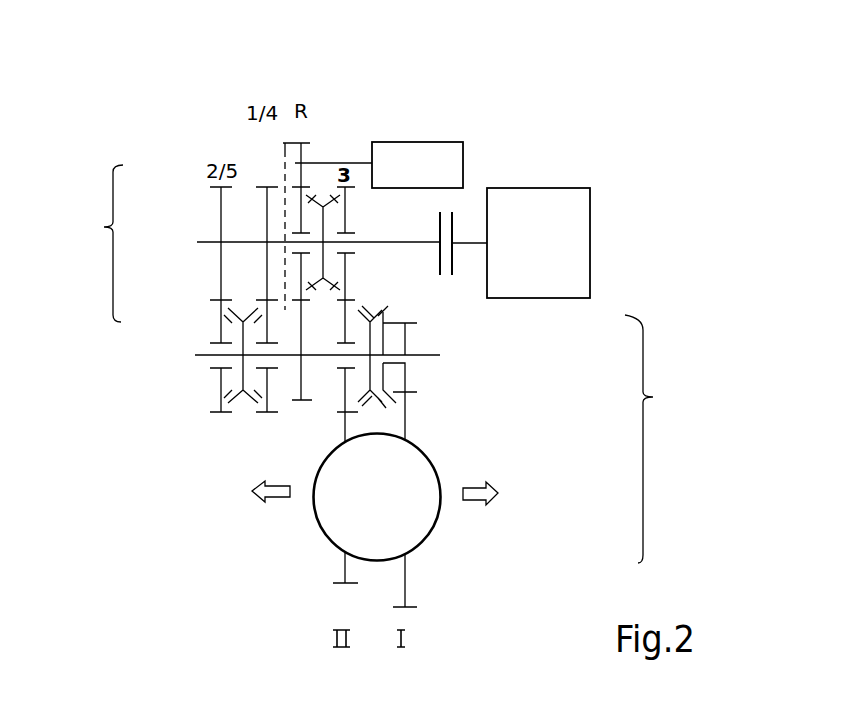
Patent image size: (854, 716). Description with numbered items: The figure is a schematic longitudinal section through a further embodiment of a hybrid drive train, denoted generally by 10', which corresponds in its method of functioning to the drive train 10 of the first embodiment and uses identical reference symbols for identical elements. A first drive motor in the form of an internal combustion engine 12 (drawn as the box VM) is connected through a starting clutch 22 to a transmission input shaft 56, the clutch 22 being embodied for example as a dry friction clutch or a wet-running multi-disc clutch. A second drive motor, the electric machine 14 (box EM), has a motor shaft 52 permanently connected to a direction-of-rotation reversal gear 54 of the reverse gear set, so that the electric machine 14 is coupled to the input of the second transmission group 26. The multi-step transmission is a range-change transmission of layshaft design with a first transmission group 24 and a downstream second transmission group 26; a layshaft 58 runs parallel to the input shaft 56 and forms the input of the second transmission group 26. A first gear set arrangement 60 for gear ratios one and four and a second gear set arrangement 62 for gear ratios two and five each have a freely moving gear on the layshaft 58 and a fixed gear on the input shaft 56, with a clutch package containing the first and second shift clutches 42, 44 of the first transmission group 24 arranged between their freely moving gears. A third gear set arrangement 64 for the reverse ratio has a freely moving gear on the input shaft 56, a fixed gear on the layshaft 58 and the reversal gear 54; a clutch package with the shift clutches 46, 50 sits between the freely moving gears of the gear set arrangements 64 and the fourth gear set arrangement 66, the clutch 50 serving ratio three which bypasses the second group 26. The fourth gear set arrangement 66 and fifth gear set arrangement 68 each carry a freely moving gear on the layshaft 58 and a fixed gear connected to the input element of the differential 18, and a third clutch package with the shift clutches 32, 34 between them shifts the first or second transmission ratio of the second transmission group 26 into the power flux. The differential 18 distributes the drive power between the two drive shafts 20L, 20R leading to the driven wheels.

The drive train 10 is at (144, 73).
The drive train 10' is at (708, 115).
The internal combustion engine 12 is at (592, 258).
The electric machine 14 is at (440, 142).
The differential 18 is at (428, 538).
The drive shaft 20L is at (280, 502).
The drive shaft 20R is at (473, 504).
The starting clutch 22 is at (452, 266).
The first transmission group 24 is at (96, 243).
The second transmission group 26 is at (658, 439).
The first shift clutch 32 is at (408, 422).
The second shift clutch 34 is at (368, 400).
The first shift clutch 42 is at (252, 408).
The second shift clutch 44 is at (228, 386).
The third shift clutch 46 is at (320, 198).
The shift clutch 50 is at (337, 212).
The motor shaft 52 is at (347, 185).
The direction-of-rotation reversal gear 54 is at (280, 152).
The transmission input shaft 56 is at (407, 247).
The layshaft 58 is at (425, 346).
The first gear set arrangement 60 is at (261, 417).
The second gear set arrangement 62 is at (213, 423).
The third gear set arrangement 64 is at (299, 138).
The fourth gear set arrangement 66 is at (341, 588).
The fifth gear set arrangement 68 is at (408, 611).